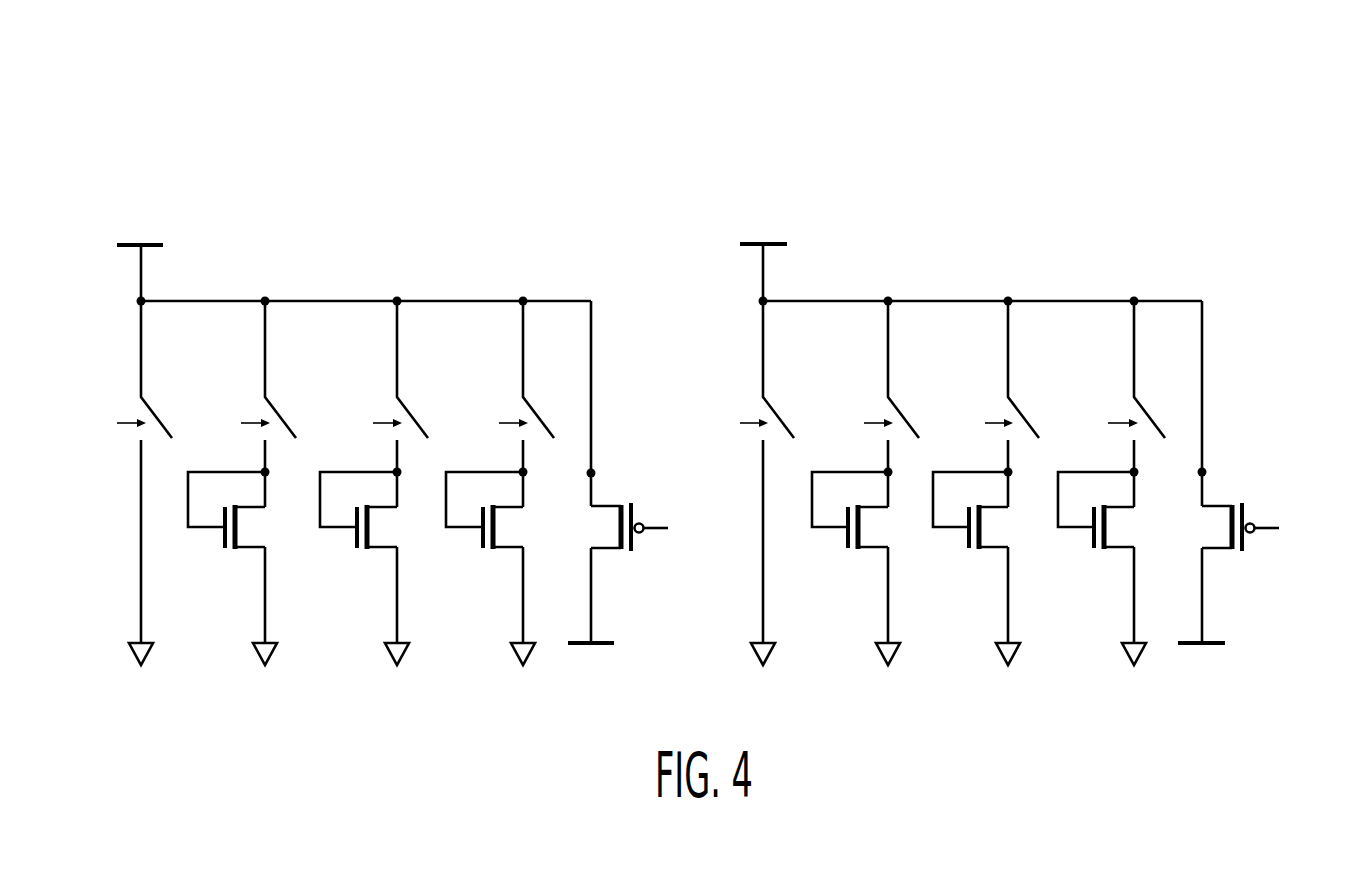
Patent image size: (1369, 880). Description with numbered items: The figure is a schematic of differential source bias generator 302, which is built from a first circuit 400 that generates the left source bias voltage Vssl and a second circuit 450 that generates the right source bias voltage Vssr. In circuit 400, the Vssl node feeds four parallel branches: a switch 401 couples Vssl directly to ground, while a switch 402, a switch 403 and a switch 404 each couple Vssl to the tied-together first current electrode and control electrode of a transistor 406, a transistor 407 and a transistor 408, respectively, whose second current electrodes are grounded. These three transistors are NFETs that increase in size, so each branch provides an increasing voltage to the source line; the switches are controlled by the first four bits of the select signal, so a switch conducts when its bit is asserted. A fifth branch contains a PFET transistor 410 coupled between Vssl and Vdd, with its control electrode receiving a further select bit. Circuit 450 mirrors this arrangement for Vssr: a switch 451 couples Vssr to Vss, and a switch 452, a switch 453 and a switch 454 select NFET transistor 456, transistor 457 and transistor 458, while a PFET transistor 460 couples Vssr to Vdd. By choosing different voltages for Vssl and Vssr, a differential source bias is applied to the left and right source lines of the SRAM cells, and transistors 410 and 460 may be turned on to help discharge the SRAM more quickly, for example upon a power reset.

The differential source bias generator 1 302 is at (678, 153).
The first circuit 400 is at (201, 175).
The switch 401 is at (152, 410).
The switch 402 is at (276, 410).
The switch 403 is at (408, 410).
The switch 404 is at (534, 410).
The transistor 406 is at (224, 541).
The transistor 407 is at (356, 543).
The transistor 408 is at (488, 543).
The transistor 410 is at (634, 546).
The second circuit 450 is at (1078, 209).
The switch 451 is at (774, 410).
The switch 452 is at (899, 410).
The switch 453 is at (1019, 410).
The switch 454 is at (1146, 412).
The transistor 456 is at (846, 541).
The transistor 457 is at (967, 545).
The transistor 458 is at (1094, 545).
The transistor 460 is at (1245, 508).